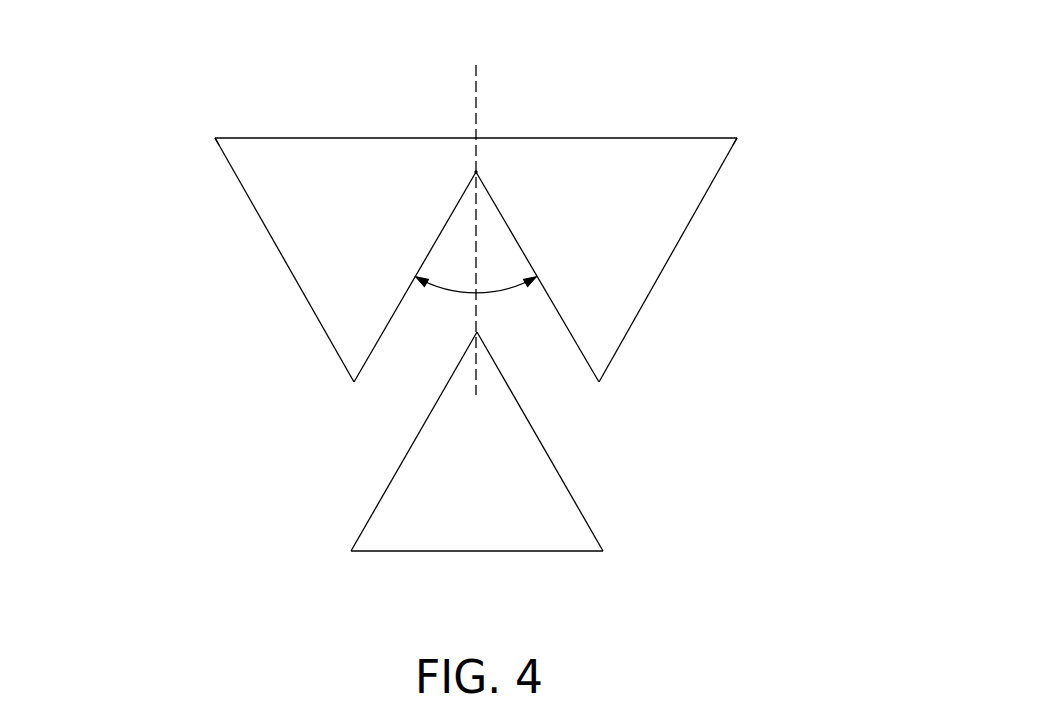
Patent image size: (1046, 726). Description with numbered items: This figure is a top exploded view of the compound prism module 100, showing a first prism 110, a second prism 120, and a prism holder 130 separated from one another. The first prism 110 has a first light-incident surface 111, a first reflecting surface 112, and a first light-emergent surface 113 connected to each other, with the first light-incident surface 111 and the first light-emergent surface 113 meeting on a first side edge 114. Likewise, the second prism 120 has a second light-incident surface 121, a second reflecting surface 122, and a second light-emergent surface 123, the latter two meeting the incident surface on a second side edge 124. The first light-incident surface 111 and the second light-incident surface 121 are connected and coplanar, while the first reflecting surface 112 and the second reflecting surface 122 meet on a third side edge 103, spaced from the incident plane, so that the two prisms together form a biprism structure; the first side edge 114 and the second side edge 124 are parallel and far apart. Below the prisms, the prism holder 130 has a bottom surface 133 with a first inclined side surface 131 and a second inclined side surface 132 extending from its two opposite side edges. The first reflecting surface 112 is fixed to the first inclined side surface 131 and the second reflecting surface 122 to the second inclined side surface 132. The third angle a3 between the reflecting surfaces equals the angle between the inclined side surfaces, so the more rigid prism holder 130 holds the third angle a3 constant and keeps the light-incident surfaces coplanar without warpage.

The compound prism module 100 is at (481, 329).
The third side edge 103 is at (463, 160).
The first prism 110 is at (299, 241).
The first light-incident surface 111 is at (287, 127).
The first reflecting surface 112 is at (401, 313).
The first light-emergent surface 113 is at (281, 280).
The first side edge 114 is at (215, 138).
The second prism 120 is at (657, 243).
The second light-incident surface 121 is at (627, 128).
The second reflecting surface 122 is at (551, 313).
The second light-emergent surface 123 is at (673, 280).
The second side edge 124 is at (737, 138).
The prism holder 130 is at (475, 486).
The first inclined side surface 131 is at (359, 513).
The second inclined side surface 132 is at (597, 513).
The bottom surface 133 is at (437, 560).
The third angle a3 is at (476, 275).